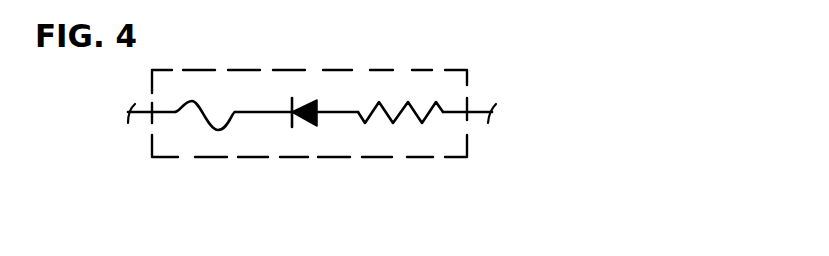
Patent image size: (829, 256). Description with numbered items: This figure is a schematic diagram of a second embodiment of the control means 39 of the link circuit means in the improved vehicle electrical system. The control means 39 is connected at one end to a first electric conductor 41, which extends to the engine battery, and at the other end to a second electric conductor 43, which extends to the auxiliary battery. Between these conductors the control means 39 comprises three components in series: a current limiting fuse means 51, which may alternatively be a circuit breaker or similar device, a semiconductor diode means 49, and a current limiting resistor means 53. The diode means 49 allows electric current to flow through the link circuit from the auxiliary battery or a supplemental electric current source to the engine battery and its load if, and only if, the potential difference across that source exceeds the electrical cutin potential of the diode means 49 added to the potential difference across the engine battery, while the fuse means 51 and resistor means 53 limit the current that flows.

The control means 39 is at (377, 69).
The first electric conductor 41 is at (141, 113).
The second electric conductor 43 is at (477, 112).
The semiconductor diode means 49 is at (305, 129).
The current limiting fuse means 51 is at (209, 131).
The current limiting resistor means 53 is at (400, 129).